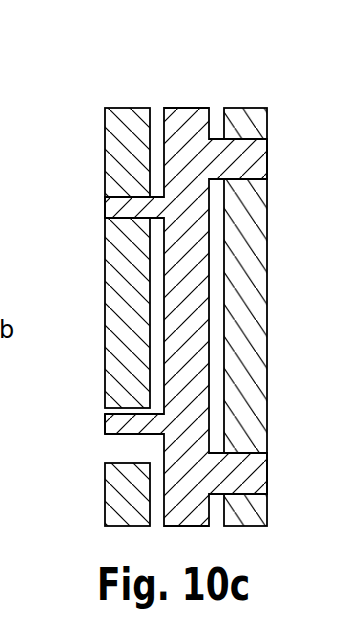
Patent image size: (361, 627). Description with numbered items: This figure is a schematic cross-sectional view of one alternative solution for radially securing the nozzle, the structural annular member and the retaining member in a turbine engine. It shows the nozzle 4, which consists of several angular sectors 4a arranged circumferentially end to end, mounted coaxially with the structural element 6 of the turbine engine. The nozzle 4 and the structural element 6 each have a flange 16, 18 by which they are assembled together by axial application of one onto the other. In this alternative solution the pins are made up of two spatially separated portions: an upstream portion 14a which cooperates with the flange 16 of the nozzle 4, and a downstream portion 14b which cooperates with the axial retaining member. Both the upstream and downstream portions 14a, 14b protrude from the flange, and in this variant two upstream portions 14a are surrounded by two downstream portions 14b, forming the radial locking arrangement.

The nozzle 4 is at (114, 274).
The angular sector 4a is at (114, 274).
The structural element 6 is at (174, 274).
The flange 16 is at (123, 133).
The flange 18 is at (178, 127).
The upstream portion 14a is at (117, 204).
The downstream portion 14b is at (242, 164).